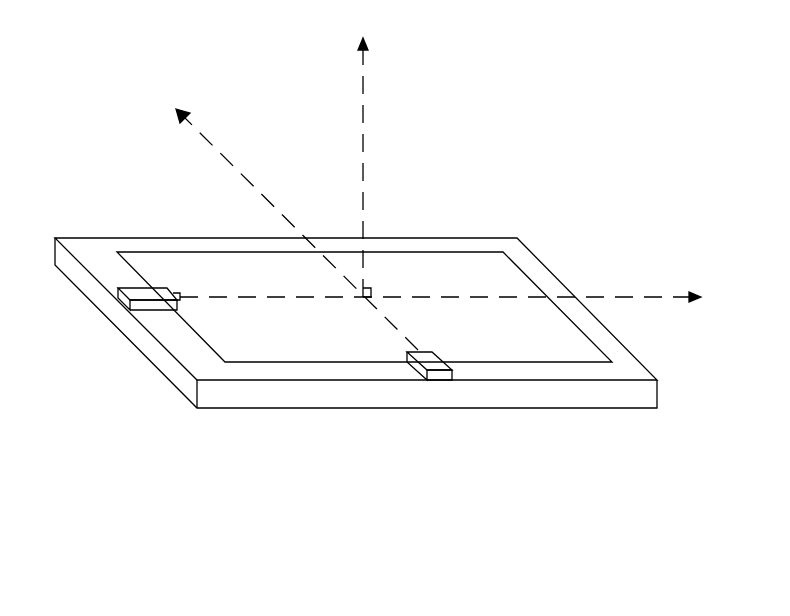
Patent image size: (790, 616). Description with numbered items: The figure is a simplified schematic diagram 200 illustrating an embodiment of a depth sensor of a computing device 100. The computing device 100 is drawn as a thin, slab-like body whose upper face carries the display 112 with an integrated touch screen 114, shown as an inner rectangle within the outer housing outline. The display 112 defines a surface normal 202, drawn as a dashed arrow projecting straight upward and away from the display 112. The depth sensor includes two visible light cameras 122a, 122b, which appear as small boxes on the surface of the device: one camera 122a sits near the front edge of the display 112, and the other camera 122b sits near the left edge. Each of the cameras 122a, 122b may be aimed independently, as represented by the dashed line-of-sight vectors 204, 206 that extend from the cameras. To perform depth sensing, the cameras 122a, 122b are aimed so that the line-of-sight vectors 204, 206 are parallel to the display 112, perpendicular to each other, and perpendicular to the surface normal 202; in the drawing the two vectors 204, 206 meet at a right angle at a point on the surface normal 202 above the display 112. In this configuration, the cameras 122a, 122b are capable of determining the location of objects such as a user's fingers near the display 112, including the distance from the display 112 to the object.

The computing device 100 is at (637, 410).
The display 112 is at (380, 294).
The touch screen 114 is at (526, 274).
The visible light camera 122a is at (435, 380).
The visible light camera 122b is at (120, 303).
The diagram 200 is at (697, 99).
The surface normal 202 is at (366, 98).
The line-of-sight vector 204 is at (250, 182).
The line-of-sight vector 206 is at (273, 300).